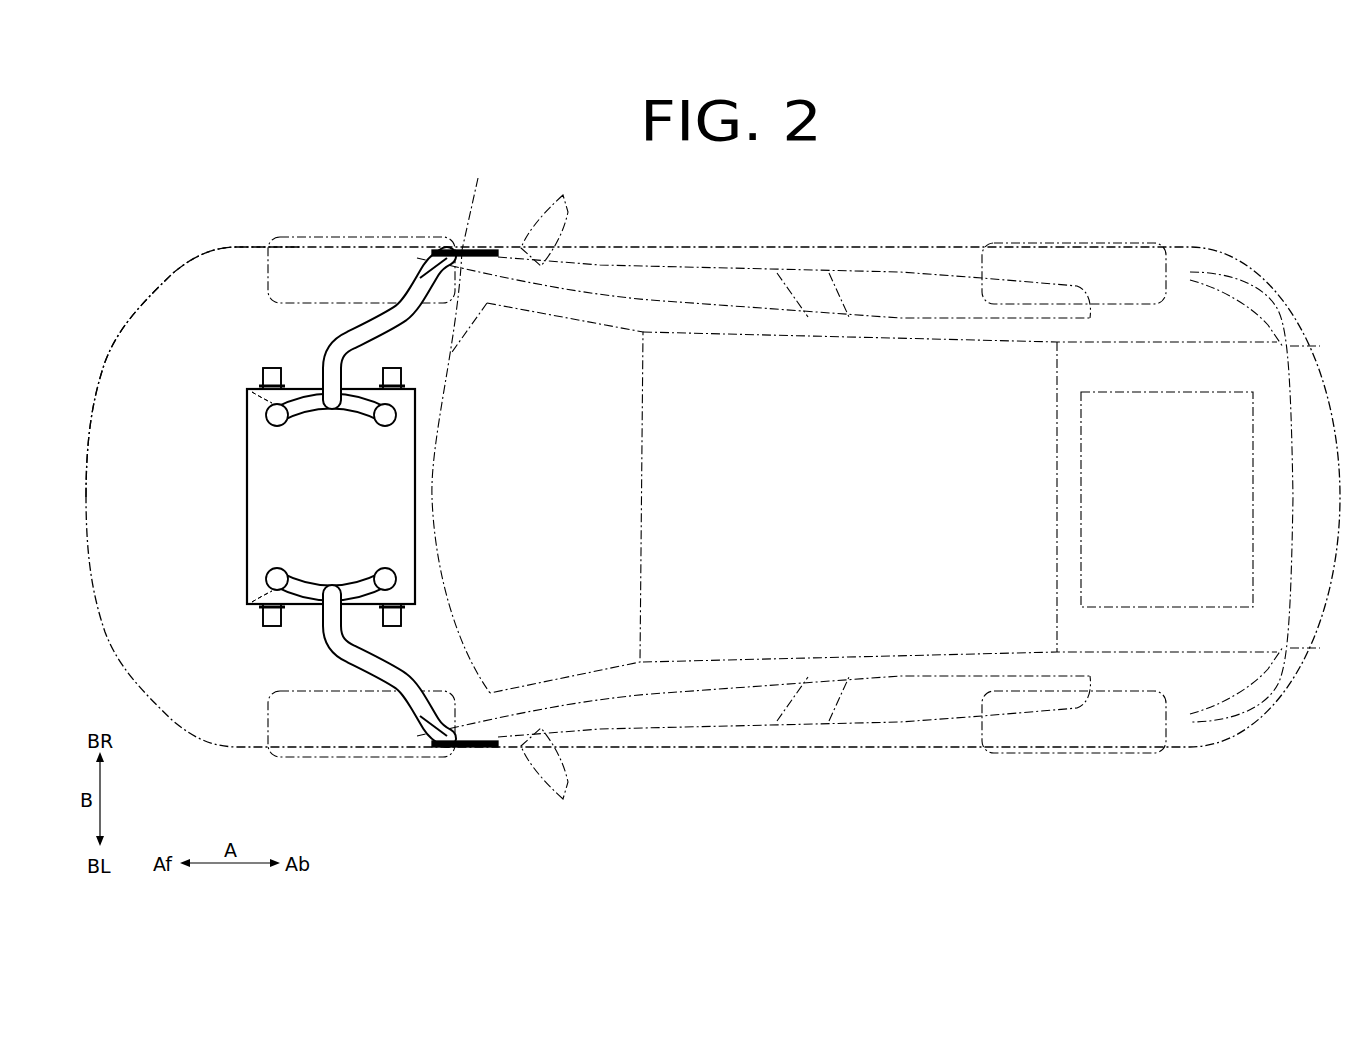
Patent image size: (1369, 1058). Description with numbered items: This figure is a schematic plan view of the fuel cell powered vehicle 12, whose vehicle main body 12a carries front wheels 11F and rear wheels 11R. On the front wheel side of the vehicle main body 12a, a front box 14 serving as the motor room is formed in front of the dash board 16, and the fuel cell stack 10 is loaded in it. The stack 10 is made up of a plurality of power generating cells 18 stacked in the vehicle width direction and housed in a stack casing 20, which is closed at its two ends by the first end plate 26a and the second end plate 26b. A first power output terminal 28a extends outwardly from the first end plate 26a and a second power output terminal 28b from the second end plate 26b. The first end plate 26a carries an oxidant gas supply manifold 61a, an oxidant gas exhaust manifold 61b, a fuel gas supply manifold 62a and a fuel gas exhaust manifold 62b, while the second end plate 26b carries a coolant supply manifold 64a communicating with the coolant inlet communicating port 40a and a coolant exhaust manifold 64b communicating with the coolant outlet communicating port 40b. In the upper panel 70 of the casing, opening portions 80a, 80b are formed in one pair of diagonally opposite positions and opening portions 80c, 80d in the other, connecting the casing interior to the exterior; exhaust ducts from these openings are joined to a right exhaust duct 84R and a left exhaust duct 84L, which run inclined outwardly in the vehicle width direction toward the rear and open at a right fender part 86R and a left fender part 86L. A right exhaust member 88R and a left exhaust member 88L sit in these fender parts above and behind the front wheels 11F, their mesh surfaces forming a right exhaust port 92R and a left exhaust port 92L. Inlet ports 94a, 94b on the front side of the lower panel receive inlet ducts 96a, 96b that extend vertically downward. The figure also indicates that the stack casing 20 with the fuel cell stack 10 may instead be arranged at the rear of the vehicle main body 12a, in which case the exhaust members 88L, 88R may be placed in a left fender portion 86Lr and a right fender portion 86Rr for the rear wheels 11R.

The fuel cell stack 10 is at (416, 453).
The fuel cell powered vehicle 12 is at (169, 195).
The vehicle main body 12a is at (232, 247).
The front box 14 is at (168, 302).
The dash board 16 is at (433, 473).
The power generating cell 18 is at (391, 490).
The stack casing 20 is at (416, 514).
The front wheels 11F is at (311, 236).
The rear wheels 11R is at (1022, 242).
The first end plate 26a is at (413, 614).
The second end plate 26b is at (416, 383).
The first power output terminal 28a is at (334, 583).
The second power output terminal 28b is at (334, 411).
The coolant inlet communicating port 40a is at (476, 360).
The coolant outlet communicating port 40b is at (258, 358).
The oxidant gas supply manifold 61a is at (402, 622).
The oxidant gas exhaust manifold 61b is at (258, 636).
The fuel gas supply manifold 62a is at (271, 628).
The fuel gas exhaust manifold 62b is at (477, 631).
The coolant supply manifold 64a is at (402, 372).
The coolant exhaust manifold 64b is at (272, 367).
The upper panel 70 is at (413, 523).
The opening portion 80a is at (270, 418).
The opening portion 80b is at (385, 568).
The opening portion 80c is at (268, 575).
The opening portion 80d is at (386, 427).
The right exhaust duct 84R is at (372, 337).
The left exhaust duct 84L is at (368, 655).
The right fender part 86R is at (437, 249).
The left fender part 86L is at (432, 749).
The right fender portion for the rear wheels 86Rr is at (1196, 248).
The left fender portion for the rear wheels 86Lr is at (1196, 747).
The right exhaust member 88R is at (483, 249).
The left exhaust member 88L is at (483, 749).
The right exhaust port 92R is at (460, 250).
The left exhaust port 92L is at (456, 750).
The inlet port 94a is at (252, 395).
The inlet port 94b is at (252, 600).
The inlet duct 96a is at (213, 391).
The inlet duct 96b is at (213, 604).